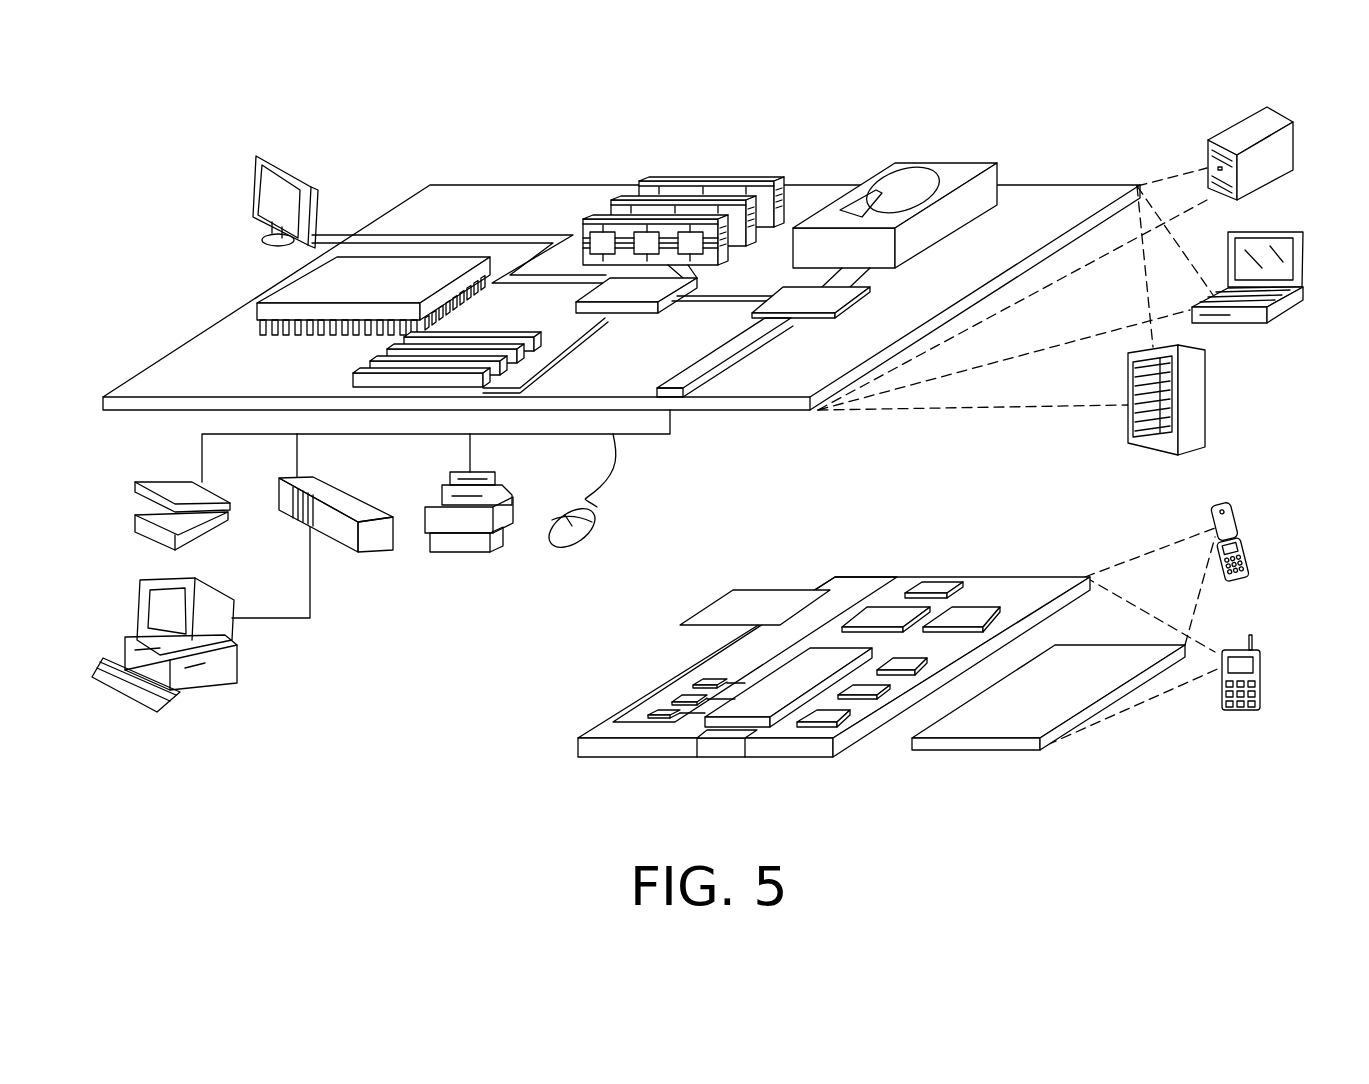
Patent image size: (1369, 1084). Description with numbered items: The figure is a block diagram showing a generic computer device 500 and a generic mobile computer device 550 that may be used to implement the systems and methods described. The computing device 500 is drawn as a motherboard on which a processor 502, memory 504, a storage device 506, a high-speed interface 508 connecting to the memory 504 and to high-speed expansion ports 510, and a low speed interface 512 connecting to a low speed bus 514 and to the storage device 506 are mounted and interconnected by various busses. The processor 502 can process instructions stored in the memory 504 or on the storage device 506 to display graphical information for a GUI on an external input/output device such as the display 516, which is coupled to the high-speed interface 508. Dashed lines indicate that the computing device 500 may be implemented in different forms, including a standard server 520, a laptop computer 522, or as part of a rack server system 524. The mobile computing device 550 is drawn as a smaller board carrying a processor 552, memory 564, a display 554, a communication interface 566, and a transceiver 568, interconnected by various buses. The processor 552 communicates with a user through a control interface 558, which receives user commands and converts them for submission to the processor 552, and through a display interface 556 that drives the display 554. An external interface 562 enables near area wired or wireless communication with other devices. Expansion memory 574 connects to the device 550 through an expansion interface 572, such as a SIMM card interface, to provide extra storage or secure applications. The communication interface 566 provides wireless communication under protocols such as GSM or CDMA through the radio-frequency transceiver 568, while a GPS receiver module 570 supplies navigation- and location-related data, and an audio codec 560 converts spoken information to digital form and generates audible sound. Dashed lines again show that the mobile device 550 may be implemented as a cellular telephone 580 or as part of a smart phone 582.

The generic computer device 500 is at (383, 135).
The processor 502 is at (287, 290).
The memory 504 is at (712, 182).
The storage device 506 is at (935, 165).
The high-speed interface 508 is at (647, 287).
The high-speed expansion ports 510 is at (380, 365).
The low speed interface 512 is at (785, 297).
The low speed bus 514 is at (676, 385).
The display 516 is at (266, 160).
The standard server 520 is at (1230, 135).
The laptop computer 522 is at (1280, 232).
The rack server system 524 is at (1205, 397).
The generic mobile computer device 550 is at (538, 763).
The processor 552 is at (762, 697).
The display 554 is at (1083, 662).
The display interface 556 is at (833, 712).
The control interface 558 is at (870, 690).
The audio codec 560 is at (905, 661).
The external interface 562 is at (720, 745).
The memory 564 is at (680, 697).
The communication interface 566 is at (887, 610).
The transceiver 568 is at (972, 610).
The GPS receiver module 570 is at (935, 588).
The expansion interface 572 is at (815, 590).
The expansion memory 574 is at (731, 590).
The cellular telephone 580 is at (1225, 503).
The smart phone 582 is at (1233, 650).